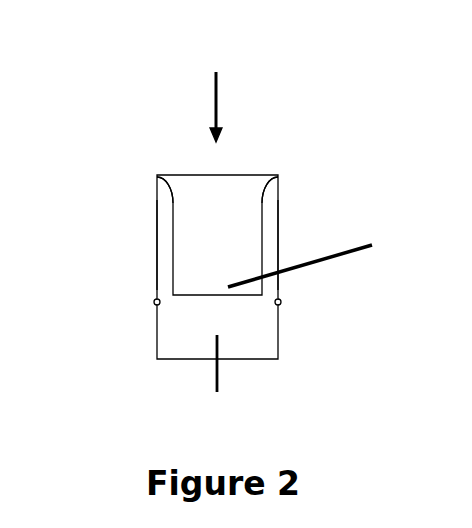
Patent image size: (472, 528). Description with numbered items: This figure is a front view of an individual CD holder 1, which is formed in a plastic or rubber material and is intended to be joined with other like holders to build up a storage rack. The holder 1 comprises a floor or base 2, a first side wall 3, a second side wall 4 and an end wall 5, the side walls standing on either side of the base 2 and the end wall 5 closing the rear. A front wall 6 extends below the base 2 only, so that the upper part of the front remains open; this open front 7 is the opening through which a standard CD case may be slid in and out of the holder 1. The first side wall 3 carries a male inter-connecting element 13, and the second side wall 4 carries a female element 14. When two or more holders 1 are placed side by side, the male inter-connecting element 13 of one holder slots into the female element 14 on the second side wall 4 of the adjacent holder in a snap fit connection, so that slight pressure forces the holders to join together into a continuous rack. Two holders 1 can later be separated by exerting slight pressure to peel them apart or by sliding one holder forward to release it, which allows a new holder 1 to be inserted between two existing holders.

The individual CD holder 1 is at (217, 91).
The base 2 is at (312, 261).
The first side wall 3 is at (156, 241).
The second side wall 4 is at (279, 236).
The end wall 5 is at (243, 192).
The front wall 6 is at (217, 381).
The open front 7 is at (204, 265).
The male inter-connecting element 13 is at (150, 302).
The female element 14 is at (283, 300).